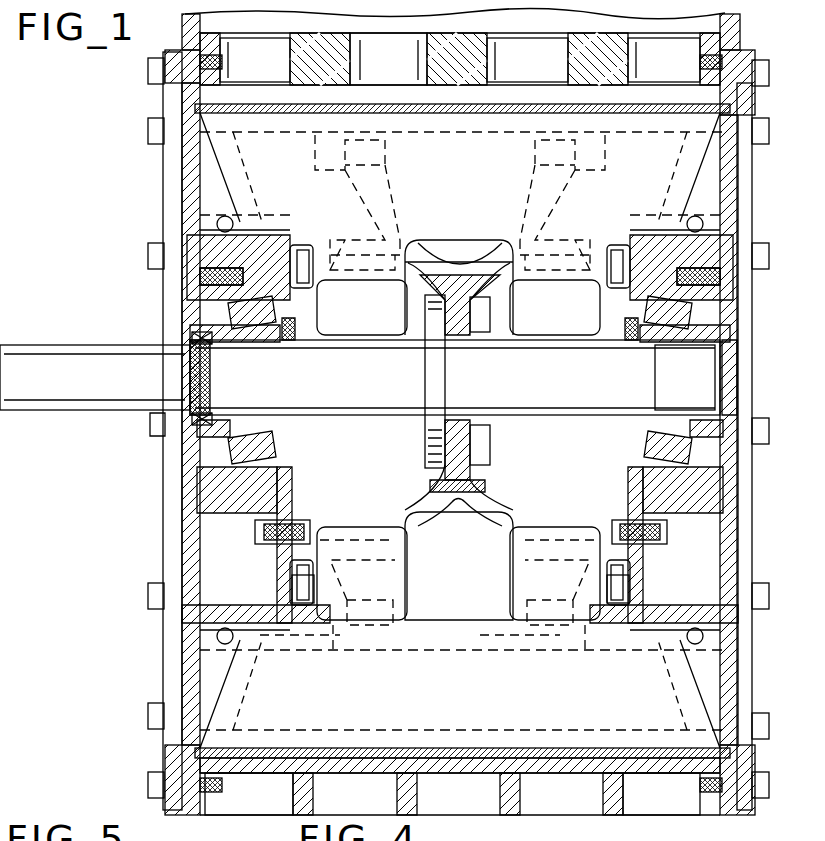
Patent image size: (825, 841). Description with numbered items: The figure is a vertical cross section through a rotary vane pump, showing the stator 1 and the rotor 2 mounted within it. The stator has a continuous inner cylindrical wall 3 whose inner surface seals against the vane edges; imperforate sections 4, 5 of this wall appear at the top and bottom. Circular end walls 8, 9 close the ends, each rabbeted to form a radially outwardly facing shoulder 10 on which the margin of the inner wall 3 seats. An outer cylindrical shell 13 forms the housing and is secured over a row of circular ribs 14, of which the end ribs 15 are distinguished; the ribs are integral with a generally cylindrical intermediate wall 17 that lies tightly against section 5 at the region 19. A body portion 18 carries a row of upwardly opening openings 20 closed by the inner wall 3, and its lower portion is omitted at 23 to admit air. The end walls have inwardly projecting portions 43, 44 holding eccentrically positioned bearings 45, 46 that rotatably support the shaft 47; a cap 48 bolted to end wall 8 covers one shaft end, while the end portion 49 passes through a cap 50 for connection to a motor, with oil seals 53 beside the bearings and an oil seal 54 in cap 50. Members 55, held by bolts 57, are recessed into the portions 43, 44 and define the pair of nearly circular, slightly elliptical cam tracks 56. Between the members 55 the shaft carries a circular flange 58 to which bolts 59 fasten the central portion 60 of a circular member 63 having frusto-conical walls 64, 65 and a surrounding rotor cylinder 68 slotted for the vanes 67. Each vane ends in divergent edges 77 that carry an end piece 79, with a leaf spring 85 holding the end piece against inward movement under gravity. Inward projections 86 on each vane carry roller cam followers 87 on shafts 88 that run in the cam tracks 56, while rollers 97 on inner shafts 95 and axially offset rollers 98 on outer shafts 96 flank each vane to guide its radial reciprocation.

The stator 1 is at (157, 658).
The rotor 2 is at (378, 468).
The inner cylindrical wall 3 is at (250, 100).
The imperforate section 4 is at (462, 113).
The imperforate section 5 is at (538, 750).
The end wall 8 is at (720, 228).
The end wall 9 is at (182, 210).
The radially outwardly facing shoulder 10 is at (776, 112).
The outer cylindrical shell 13 is at (232, 815).
The circular ribs 14 is at (397, 790).
The end ribs 15 is at (200, 805).
The intermediate wall 17 is at (495, 773).
The body portion 18 is at (340, 85).
The tightly engaged portion 19 is at (470, 748).
The openings 20 is at (460, 69).
The omitted lower portion 23 is at (525, 90).
The inwardly projecting portion 43 is at (660, 250).
The inwardly projecting portion 44 is at (270, 255).
The bearing 45 is at (672, 410).
The bearing 46 is at (275, 395).
The shaft 47 is at (522, 382).
The cap 48 is at (738, 368).
The end portion of shaft 49 is at (116, 345).
The cap 50 is at (170, 440).
The oil seals 53 is at (296, 330).
The oil seal 54 is at (178, 328).
The cam track members 55 is at (292, 500).
The cam tracks 56 is at (292, 585).
The bolts 57 is at (255, 533).
The circular flange 58 is at (425, 360).
The bolts 59 is at (490, 450).
The central portion 60 is at (488, 480).
The circular member 63 is at (486, 506).
The frusto-conical wall 64 is at (572, 197).
The frusto-conical wall 65 is at (395, 205).
The vanes 67 is at (484, 189).
The cylinder of the rotor 68 is at (392, 650).
The end edges 77 is at (690, 210).
The end piece 79 is at (705, 685).
The leaf spring 85 is at (232, 222).
The projections 86 is at (384, 299).
The cam follower 87 is at (305, 260).
The shaft 88 is at (430, 291).
The inner shafts 95 is at (360, 210).
The outer shafts 96 is at (388, 152).
The rollers 97 is at (365, 255).
The rollers 98 is at (313, 152).